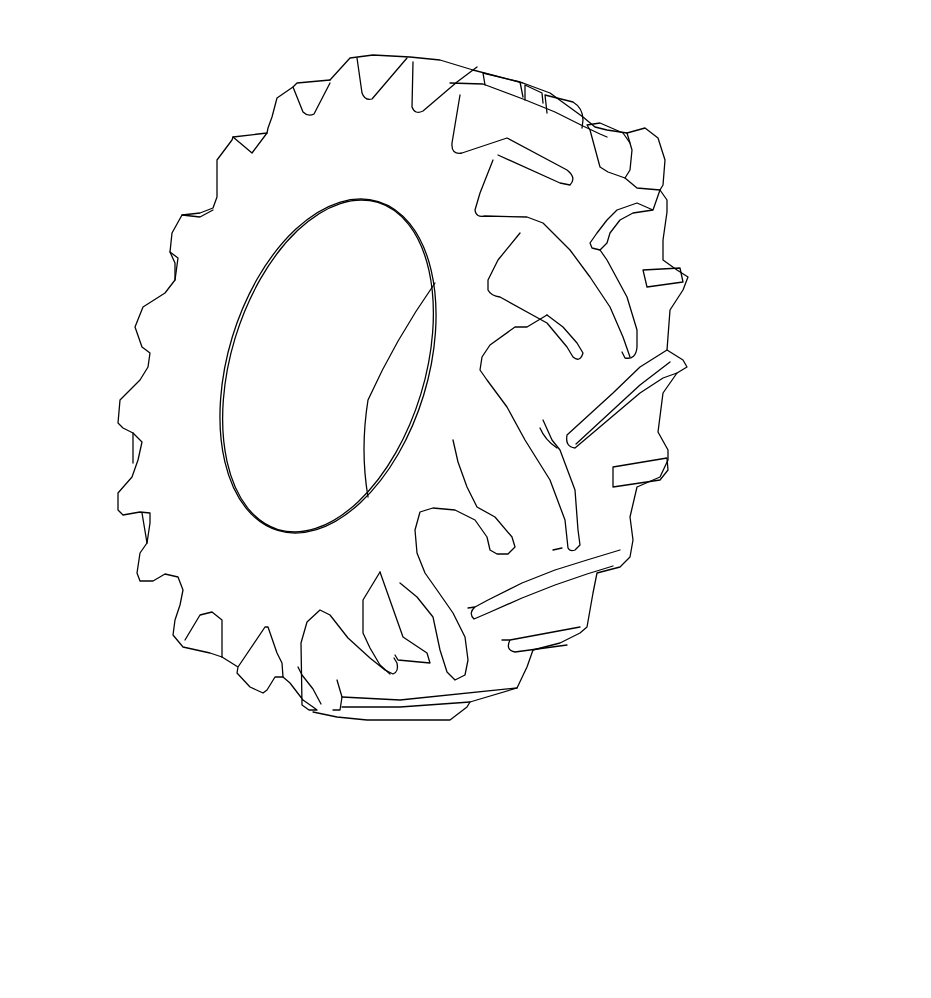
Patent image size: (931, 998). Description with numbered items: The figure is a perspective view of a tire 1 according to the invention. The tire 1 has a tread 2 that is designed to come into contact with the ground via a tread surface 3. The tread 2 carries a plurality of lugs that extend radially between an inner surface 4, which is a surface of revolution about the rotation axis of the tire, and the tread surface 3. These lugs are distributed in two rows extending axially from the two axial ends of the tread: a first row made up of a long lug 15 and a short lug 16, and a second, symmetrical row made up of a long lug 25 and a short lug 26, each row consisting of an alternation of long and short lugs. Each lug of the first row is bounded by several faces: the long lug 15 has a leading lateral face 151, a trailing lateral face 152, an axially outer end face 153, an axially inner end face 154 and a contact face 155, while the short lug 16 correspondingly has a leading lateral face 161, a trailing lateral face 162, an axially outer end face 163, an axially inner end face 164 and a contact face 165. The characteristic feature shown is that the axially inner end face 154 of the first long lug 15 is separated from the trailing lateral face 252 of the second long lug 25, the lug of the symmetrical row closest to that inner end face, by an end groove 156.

The tire 1 is at (148, 151).
The tread 2 is at (267, 101).
The tread surface 3 is at (380, 52).
The inner surface 4 is at (415, 110).
The long lug 15 is at (697, 358).
The leading lateral face 151 is at (643, 393).
The trailing lateral face 152 is at (637, 363).
The axially outer end face 153 is at (683, 363).
The axially inner end face 154 is at (567, 450).
The contact face 155 is at (642, 377).
The end groove 156 is at (562, 447).
The short lug 16 is at (670, 473).
The leading lateral face 161 is at (635, 487).
The trailing lateral face 162 is at (637, 452).
The axially outer end face 163 is at (667, 463).
The axially inner end face 164 is at (603, 483).
The contact face 165 is at (652, 460).
The long lug 25 is at (503, 415).
The trailing lateral face 252 is at (543, 420).
The short lug 26 is at (466, 504).